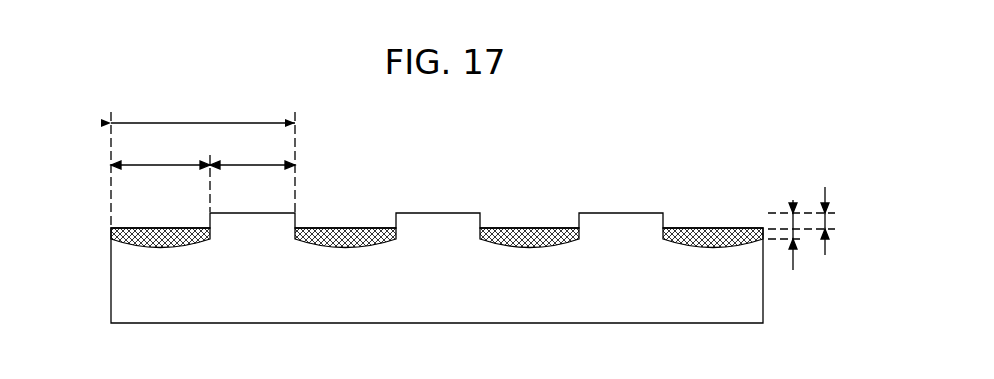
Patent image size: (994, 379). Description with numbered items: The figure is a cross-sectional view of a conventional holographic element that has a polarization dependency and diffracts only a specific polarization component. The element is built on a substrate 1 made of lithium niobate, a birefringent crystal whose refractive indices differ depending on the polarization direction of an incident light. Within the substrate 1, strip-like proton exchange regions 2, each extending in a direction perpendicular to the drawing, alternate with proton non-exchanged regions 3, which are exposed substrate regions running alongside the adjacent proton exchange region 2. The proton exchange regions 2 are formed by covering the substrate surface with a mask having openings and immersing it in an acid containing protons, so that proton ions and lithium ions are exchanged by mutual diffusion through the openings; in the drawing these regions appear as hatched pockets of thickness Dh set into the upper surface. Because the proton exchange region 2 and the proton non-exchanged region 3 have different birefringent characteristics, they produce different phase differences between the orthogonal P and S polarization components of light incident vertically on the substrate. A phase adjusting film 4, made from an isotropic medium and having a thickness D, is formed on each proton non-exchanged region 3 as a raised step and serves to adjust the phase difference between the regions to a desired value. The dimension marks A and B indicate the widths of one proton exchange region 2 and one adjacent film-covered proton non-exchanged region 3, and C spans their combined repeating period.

The substrate 1 is at (560, 316).
The proton exchange region 2 is at (528, 228).
The proton non-exchanged region 3 is at (253, 228).
The phase adjusting film 4 is at (435, 213).
The width A is at (160, 153).
The width B is at (252, 153).
The pitch C is at (203, 109).
The thickness of the phase adjusting film D is at (826, 222).
The thickness of the proton exchange region Dh is at (805, 233).